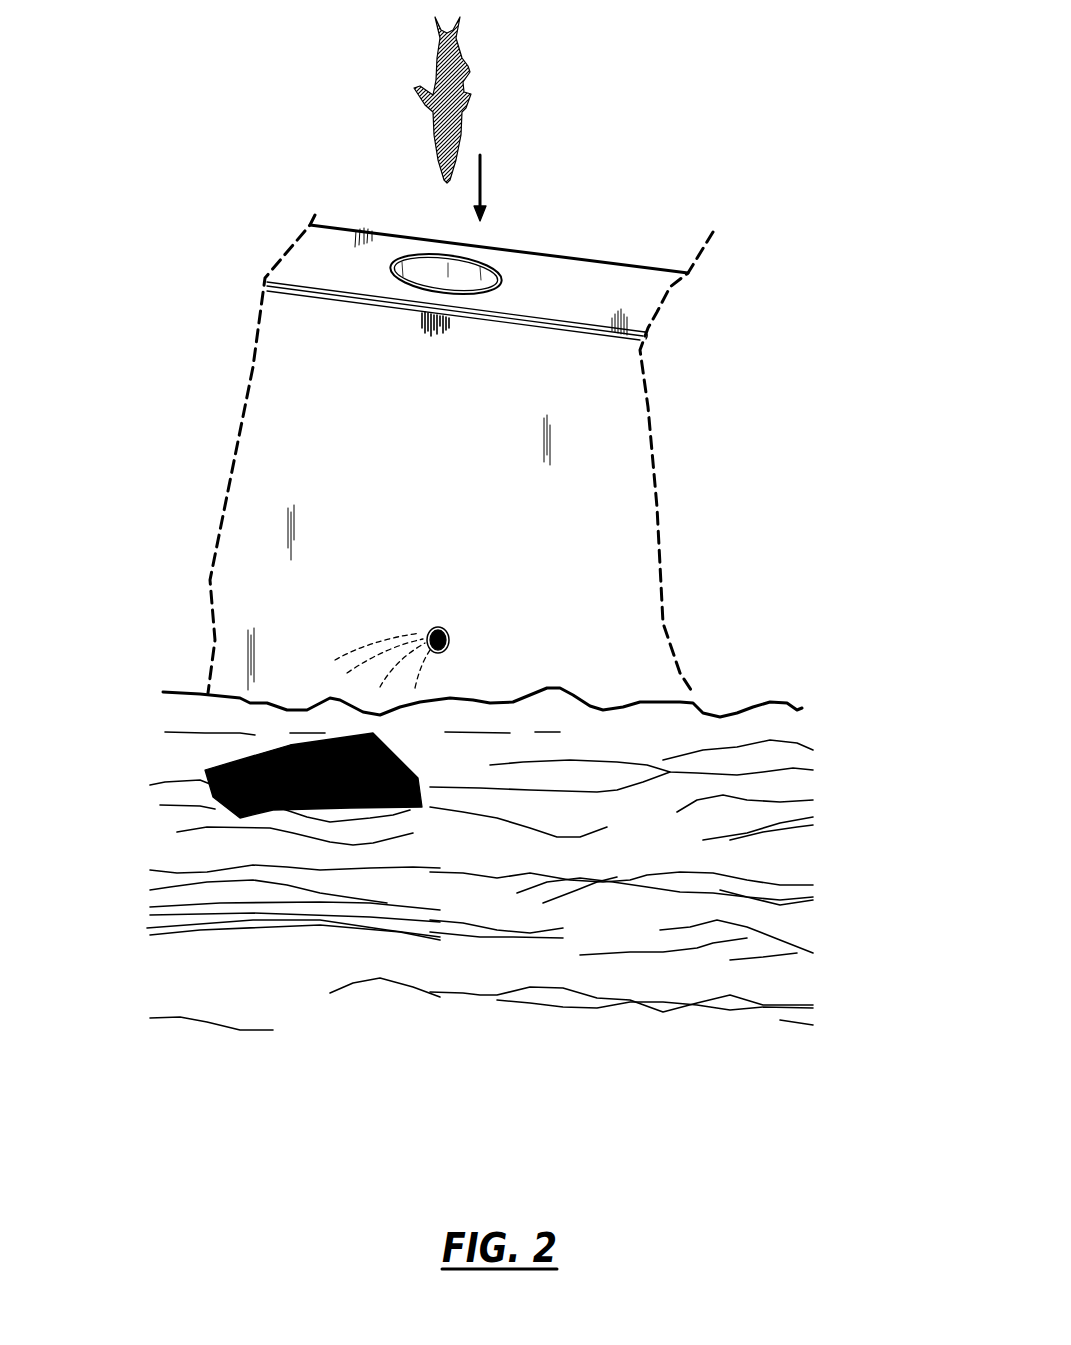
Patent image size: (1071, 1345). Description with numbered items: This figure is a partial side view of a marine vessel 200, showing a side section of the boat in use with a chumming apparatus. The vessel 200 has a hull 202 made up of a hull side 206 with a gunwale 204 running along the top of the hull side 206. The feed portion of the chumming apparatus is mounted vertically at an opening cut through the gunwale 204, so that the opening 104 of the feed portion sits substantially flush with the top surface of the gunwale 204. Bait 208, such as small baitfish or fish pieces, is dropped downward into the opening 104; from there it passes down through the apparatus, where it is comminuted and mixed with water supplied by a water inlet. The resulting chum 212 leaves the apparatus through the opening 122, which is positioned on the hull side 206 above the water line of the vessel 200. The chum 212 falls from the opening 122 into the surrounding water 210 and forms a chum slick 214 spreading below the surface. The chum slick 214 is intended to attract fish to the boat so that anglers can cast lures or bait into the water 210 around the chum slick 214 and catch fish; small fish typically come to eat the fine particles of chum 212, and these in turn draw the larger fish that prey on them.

The marine vessel 200 is at (135, 51).
The opening 104 is at (427, 263).
The opening 122 is at (450, 641).
The hull 202 is at (222, 419).
The gunwale 204 is at (578, 284).
The hull side 206 is at (628, 525).
The bait 208 is at (467, 81).
The water 210 is at (832, 736).
The chum 212 is at (365, 630).
The chum slick 214 is at (198, 760).